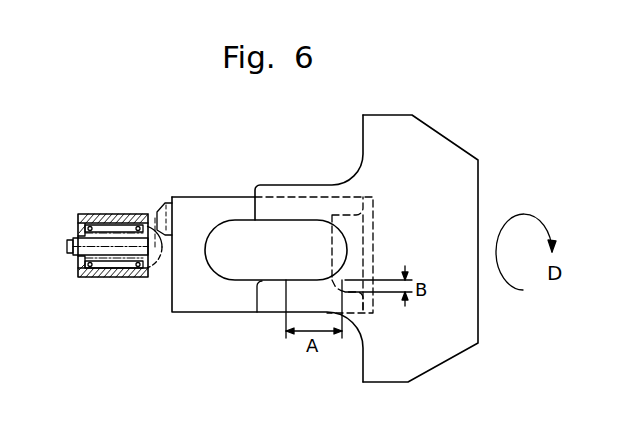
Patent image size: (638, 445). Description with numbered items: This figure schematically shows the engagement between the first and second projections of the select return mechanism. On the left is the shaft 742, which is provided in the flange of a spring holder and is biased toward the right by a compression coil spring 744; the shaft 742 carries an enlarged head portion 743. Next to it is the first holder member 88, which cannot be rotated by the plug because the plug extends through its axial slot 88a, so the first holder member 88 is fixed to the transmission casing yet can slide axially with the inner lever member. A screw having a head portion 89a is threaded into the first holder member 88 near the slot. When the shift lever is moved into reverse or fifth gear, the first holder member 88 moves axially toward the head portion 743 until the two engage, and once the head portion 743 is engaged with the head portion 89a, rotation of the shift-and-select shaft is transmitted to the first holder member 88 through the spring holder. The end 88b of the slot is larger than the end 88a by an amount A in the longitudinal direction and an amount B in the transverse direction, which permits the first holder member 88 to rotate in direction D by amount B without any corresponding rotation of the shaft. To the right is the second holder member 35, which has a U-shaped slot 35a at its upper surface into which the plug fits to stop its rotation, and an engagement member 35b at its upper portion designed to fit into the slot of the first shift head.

The second holder member 35 is at (452, 156).
The U-shaped slot 35a is at (298, 221).
The engagement member 35b is at (332, 247).
The first holder member 88 is at (226, 202).
The axial slot 88a is at (236, 283).
The slot end 88b is at (302, 284).
The head portion of screw 89a is at (160, 203).
The shaft 742 is at (88, 248).
The enlarged head portion 743 is at (150, 262).
The compression coil spring 744 is at (90, 212).